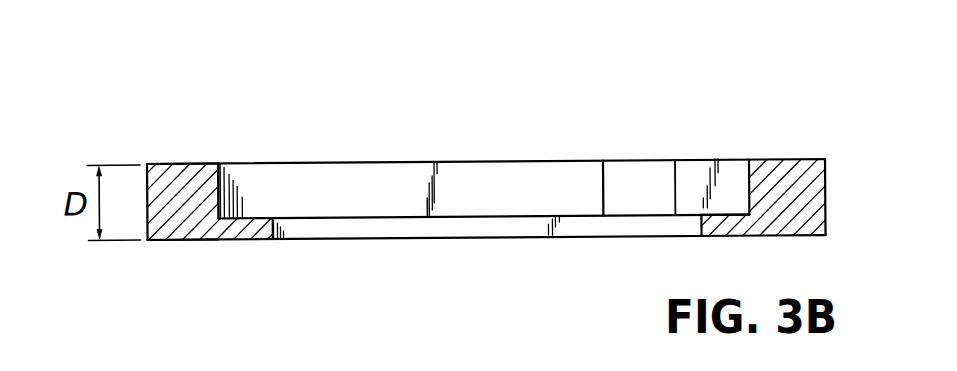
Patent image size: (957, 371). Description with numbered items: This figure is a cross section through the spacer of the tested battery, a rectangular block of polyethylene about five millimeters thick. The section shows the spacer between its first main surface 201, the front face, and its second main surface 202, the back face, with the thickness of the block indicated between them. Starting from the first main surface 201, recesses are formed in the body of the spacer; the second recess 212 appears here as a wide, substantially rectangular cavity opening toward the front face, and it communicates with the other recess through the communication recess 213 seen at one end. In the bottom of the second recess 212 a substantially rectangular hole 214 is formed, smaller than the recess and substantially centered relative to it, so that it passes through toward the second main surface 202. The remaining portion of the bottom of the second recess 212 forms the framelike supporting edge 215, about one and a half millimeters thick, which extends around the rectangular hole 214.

The first main surface 201 is at (177, 162).
The second main surface 202 is at (180, 242).
The second recess 212 is at (312, 190).
The communication recess 213 is at (634, 179).
The rectangular hole 214 is at (358, 225).
The supporting edge 215 is at (242, 229).